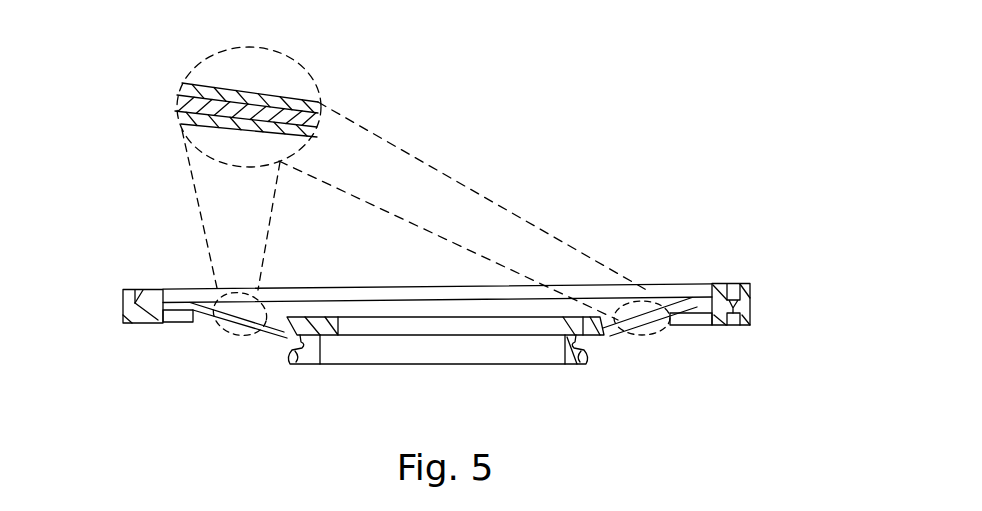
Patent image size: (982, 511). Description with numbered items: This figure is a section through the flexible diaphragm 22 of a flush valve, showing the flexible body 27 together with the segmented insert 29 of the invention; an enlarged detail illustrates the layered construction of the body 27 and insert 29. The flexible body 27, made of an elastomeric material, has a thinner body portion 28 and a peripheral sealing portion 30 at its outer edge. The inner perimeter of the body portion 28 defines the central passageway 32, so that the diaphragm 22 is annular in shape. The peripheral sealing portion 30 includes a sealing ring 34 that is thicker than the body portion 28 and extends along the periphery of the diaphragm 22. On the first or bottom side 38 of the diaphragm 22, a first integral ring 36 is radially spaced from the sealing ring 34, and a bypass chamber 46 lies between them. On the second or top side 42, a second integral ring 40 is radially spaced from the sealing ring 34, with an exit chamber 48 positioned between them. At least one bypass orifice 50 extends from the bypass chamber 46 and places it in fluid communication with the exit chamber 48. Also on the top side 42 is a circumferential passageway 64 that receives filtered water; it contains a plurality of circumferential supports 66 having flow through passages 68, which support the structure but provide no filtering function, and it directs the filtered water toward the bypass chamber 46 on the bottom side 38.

The flexible diaphragm 22 is at (603, 240).
The flexible body 27 is at (271, 89).
The body portion 28 is at (192, 323).
The segmented insert 29 is at (337, 131).
The peripheral sealing portion 30 is at (121, 307).
The central passageway 32 is at (497, 347).
The sealing ring 34 is at (121, 290).
The first integral ring 36 is at (715, 325).
The first side 38 is at (288, 332).
The second integral ring 40 is at (718, 284).
The second side 42 is at (268, 330).
The bypass chamber 46 is at (733, 325).
The exit chamber 48 is at (733, 284).
The bypass orifice 50 is at (730, 325).
The circumferential passageway 64 is at (127, 290).
The circumferential supports 66 is at (163, 290).
The flow through passages 68 is at (135, 290).